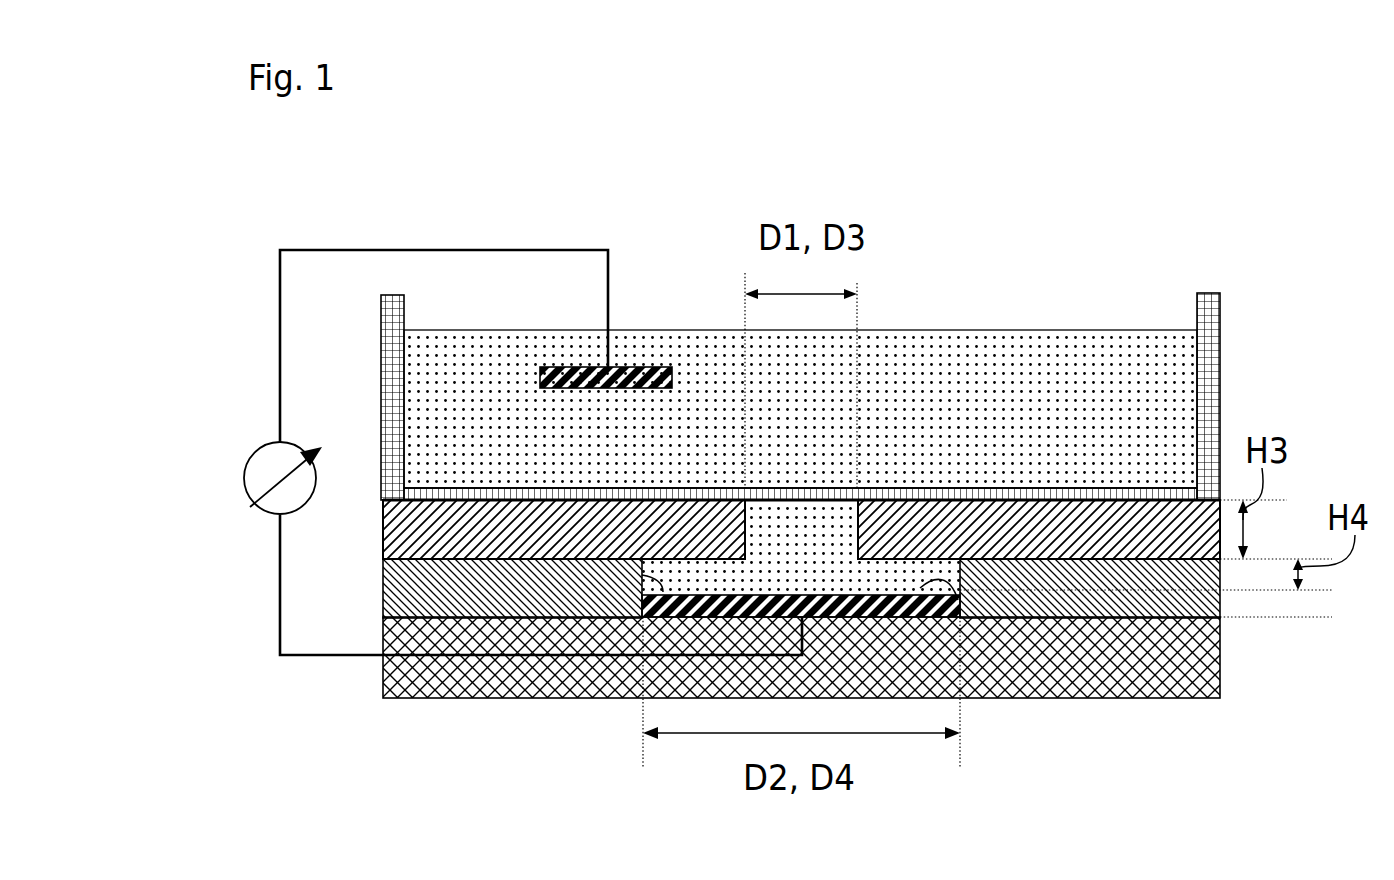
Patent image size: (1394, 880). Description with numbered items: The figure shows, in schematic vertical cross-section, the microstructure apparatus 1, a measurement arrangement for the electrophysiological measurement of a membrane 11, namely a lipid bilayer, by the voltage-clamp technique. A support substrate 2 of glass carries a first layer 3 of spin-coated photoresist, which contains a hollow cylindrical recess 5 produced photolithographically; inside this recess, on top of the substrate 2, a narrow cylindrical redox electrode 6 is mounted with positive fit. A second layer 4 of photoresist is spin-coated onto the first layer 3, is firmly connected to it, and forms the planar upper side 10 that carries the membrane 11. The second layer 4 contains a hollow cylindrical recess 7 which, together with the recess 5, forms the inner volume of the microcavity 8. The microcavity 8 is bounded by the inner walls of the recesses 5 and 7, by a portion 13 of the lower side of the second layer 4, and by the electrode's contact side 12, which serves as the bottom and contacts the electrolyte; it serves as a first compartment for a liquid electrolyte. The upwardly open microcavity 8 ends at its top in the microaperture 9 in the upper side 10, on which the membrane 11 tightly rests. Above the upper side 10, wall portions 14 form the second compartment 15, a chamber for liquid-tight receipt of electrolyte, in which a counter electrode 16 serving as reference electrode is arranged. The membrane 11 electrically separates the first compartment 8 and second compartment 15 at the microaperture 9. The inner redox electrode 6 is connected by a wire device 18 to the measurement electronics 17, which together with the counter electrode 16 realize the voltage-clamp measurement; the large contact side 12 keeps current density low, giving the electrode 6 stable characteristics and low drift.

The microstructure apparatus 1 is at (1288, 148).
The support substrate 2 is at (1220, 677).
The first layer 3 is at (383, 597).
The second layer 4 is at (383, 528).
The recess 5 is at (642, 614).
The redox electrode 6 is at (958, 600).
The recess 7 is at (855, 533).
The microcavity 8 is at (797, 563).
The microaperture 9 is at (745, 497).
The planar upper side 10 is at (1137, 495).
The membrane 11 is at (1165, 495).
The contact side 12 is at (962, 576).
The portion of the lower side of the second layer 13 is at (707, 562).
The wall portions 14 is at (1220, 307).
The second compartment 15 is at (1113, 353).
The counter electrode 16 is at (628, 367).
The measurement electronics 17 is at (252, 452).
The wire device 18 is at (483, 657).